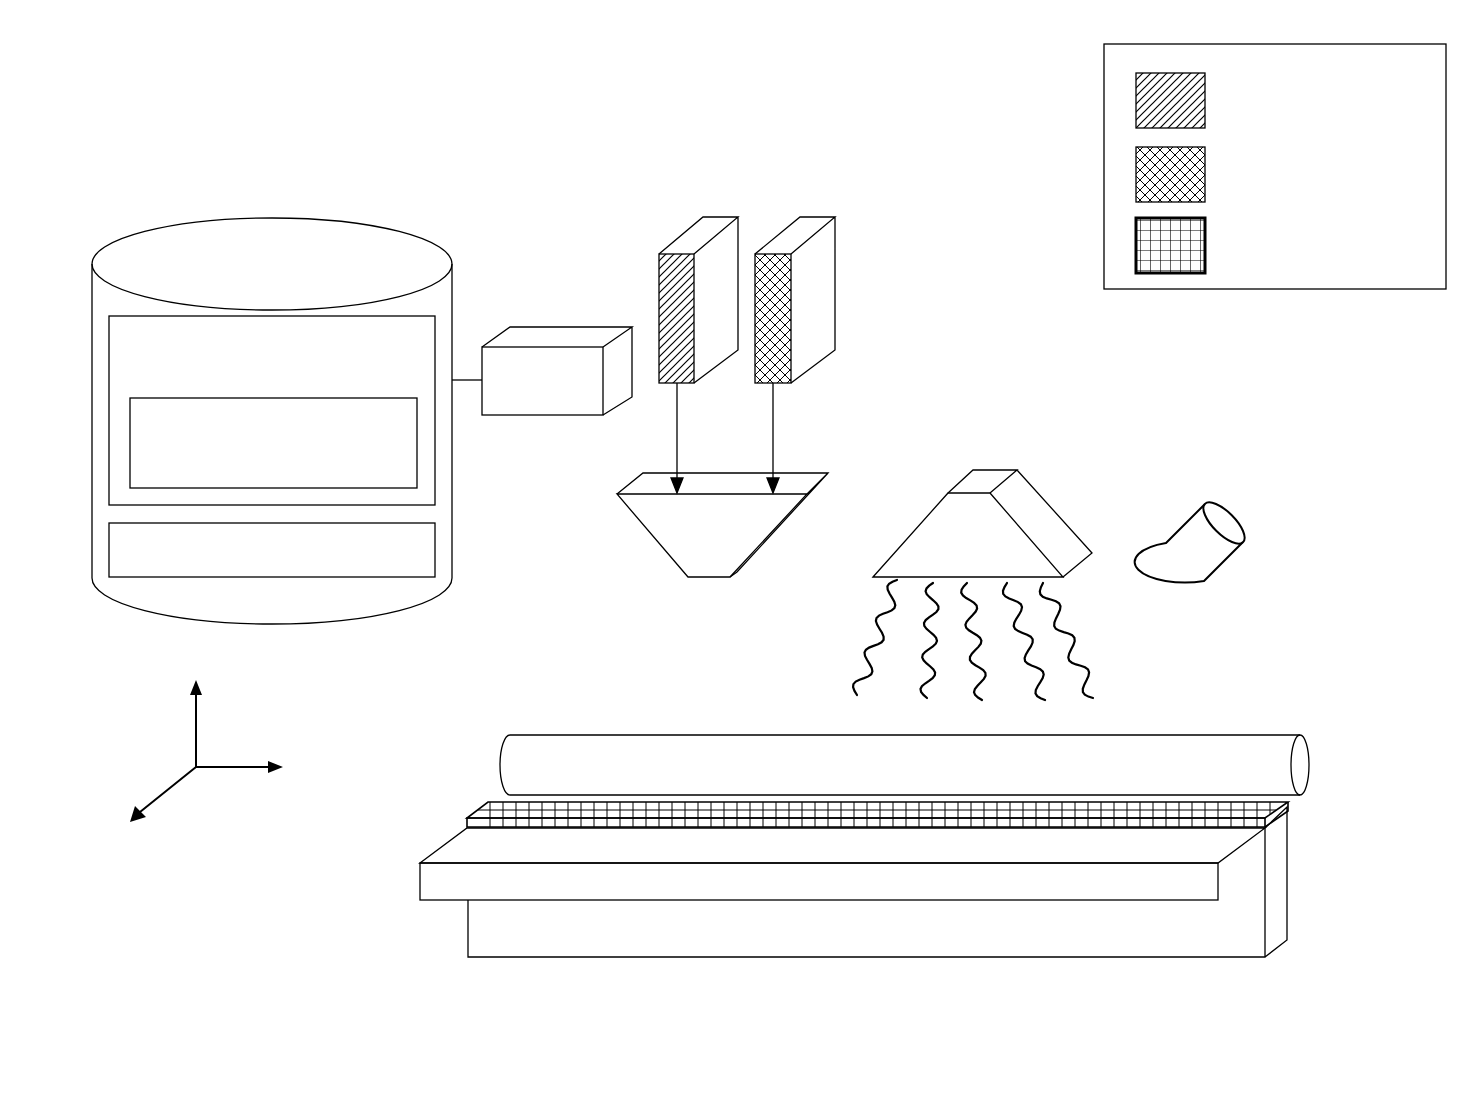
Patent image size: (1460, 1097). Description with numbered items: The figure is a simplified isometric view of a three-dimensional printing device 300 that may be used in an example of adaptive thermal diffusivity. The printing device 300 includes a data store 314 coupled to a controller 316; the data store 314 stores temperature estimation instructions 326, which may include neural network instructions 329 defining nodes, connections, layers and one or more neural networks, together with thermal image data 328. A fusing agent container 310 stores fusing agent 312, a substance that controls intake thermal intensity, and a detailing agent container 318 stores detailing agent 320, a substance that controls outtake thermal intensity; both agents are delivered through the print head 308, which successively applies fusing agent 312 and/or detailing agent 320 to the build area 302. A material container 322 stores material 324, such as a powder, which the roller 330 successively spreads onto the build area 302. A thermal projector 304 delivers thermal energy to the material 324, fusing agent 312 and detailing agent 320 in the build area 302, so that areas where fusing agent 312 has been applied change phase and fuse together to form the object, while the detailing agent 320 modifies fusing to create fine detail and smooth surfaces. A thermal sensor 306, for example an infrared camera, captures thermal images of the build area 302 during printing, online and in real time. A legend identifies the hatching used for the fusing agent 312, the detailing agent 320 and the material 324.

The 3D printing device 300 is at (243, 165).
The build area 302 is at (842, 864).
The thermal projector 304 is at (982, 470).
The thermal sensor 306 is at (1228, 527).
The print head 308 is at (655, 537).
The fusing agent container 310 is at (658, 287).
The fusing agent 312 is at (1264, 100).
The data store 314 is at (368, 222).
The controller 316 is at (557, 371).
The detailing agent container 318 is at (837, 272).
The detailing agent 320 is at (1271, 174).
The material container 322 is at (1285, 880).
The material 324 is at (1263, 245).
The temperature estimation instructions 326 is at (272, 410).
The thermal image data 328 is at (272, 550).
The neural network instructions 329 is at (273, 443).
The roller 330 is at (1233, 735).